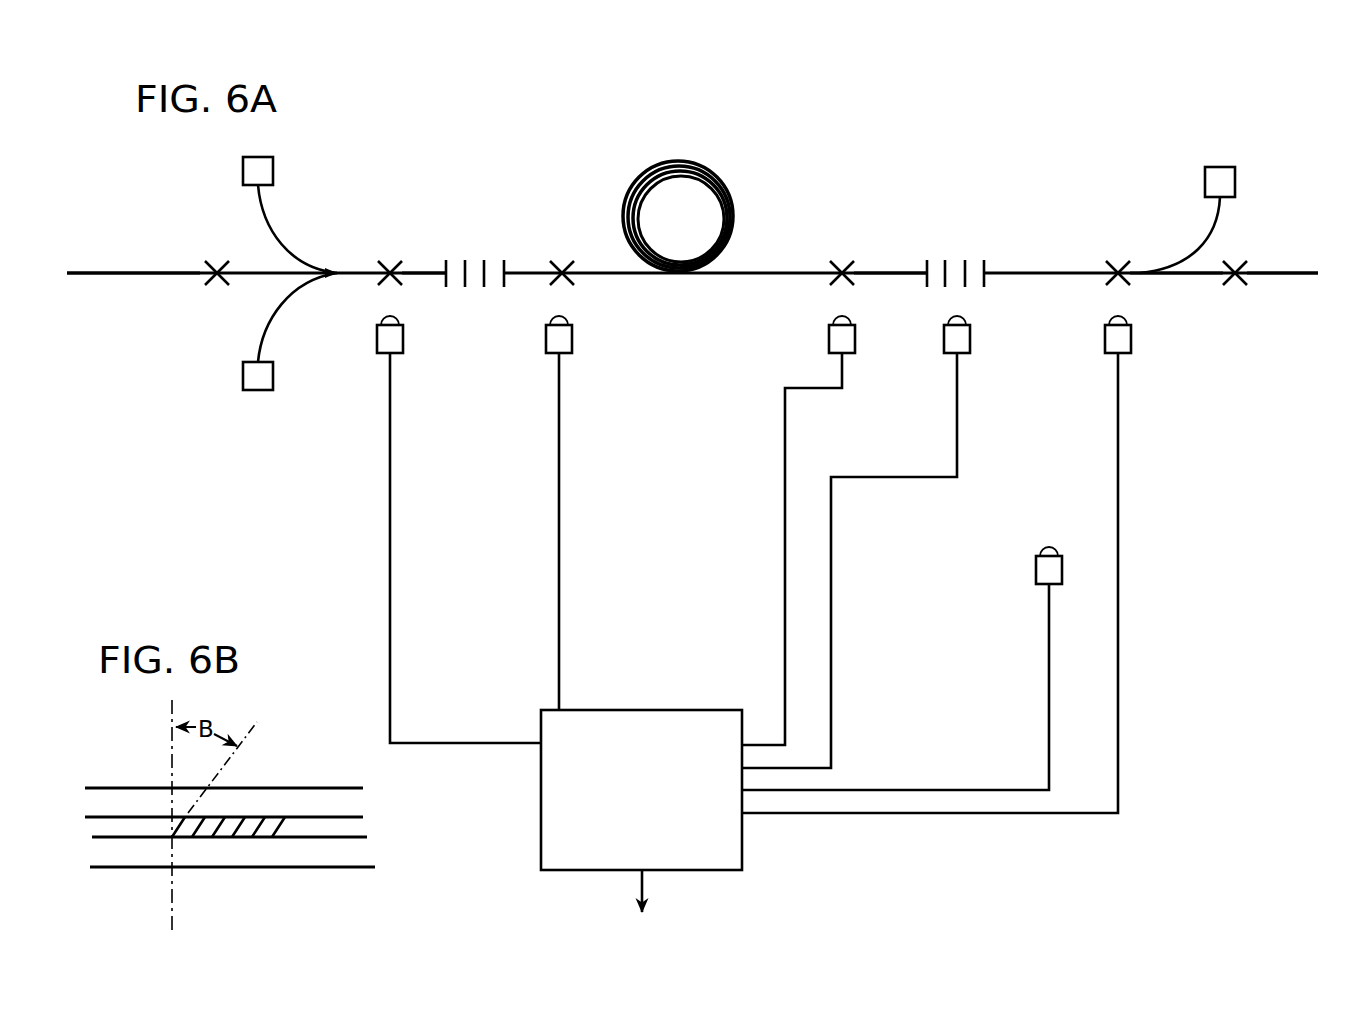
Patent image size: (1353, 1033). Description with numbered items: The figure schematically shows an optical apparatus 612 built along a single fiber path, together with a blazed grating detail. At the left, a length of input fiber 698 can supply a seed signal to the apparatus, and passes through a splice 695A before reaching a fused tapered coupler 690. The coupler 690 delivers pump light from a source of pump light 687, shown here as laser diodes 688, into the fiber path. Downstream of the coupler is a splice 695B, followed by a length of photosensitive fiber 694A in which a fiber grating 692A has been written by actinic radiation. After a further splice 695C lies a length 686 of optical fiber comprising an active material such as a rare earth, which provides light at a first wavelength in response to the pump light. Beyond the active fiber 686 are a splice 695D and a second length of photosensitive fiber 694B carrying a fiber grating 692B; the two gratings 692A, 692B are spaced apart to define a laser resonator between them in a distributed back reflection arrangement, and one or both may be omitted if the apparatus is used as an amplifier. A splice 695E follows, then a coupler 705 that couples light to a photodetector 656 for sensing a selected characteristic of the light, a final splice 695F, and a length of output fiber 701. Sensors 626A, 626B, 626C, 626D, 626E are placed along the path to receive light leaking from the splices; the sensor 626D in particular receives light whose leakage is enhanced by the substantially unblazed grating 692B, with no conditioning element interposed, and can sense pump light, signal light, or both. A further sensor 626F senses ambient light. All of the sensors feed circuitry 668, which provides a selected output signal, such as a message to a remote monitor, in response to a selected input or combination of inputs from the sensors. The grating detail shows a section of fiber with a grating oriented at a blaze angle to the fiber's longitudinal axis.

The optical apparatus 612 is at (780, 120).
The input fiber 698 is at (130, 275).
The splice 695A is at (217, 281).
The source of pump light 687 is at (292, 156).
The fused tapered coupler 690 is at (308, 300).
The laser diodes 688 is at (243, 171).
The splice 695B is at (392, 266).
The length of photosensitive fiber 694A is at (425, 272).
The fiber grating 692A is at (473, 258).
The splice 695C is at (563, 262).
The length of active optical fiber 686 is at (719, 183).
The splice 695D is at (842, 264).
The length of photosensitive fiber 694B is at (891, 272).
The fiber grating 692B is at (956, 256).
The splice 695E is at (1114, 262).
The photodetector 656 is at (1235, 172).
The coupler 705 is at (1200, 285).
The splice 695F is at (1237, 262).
The output fiber 701 is at (1291, 276).
The circuitry 668 is at (661, 801).
The sensor 626A is at (407, 340).
The sensor 626B is at (576, 342).
The sensor 626C is at (827, 342).
The sensor 626D is at (974, 342).
The sensor 626E is at (1135, 344).
The sensor 626F is at (1036, 570).